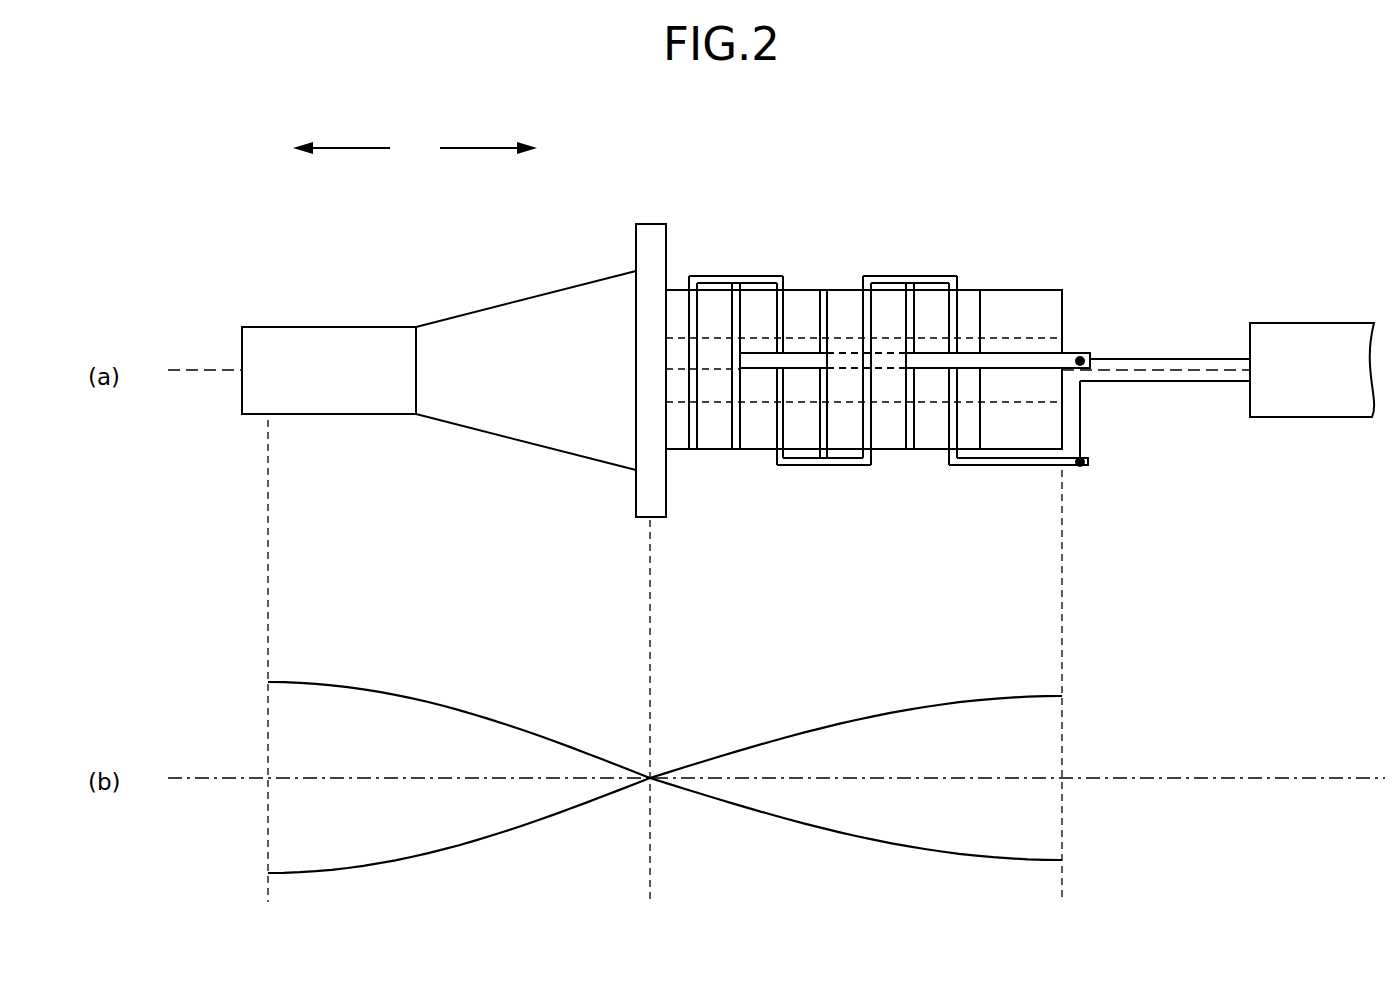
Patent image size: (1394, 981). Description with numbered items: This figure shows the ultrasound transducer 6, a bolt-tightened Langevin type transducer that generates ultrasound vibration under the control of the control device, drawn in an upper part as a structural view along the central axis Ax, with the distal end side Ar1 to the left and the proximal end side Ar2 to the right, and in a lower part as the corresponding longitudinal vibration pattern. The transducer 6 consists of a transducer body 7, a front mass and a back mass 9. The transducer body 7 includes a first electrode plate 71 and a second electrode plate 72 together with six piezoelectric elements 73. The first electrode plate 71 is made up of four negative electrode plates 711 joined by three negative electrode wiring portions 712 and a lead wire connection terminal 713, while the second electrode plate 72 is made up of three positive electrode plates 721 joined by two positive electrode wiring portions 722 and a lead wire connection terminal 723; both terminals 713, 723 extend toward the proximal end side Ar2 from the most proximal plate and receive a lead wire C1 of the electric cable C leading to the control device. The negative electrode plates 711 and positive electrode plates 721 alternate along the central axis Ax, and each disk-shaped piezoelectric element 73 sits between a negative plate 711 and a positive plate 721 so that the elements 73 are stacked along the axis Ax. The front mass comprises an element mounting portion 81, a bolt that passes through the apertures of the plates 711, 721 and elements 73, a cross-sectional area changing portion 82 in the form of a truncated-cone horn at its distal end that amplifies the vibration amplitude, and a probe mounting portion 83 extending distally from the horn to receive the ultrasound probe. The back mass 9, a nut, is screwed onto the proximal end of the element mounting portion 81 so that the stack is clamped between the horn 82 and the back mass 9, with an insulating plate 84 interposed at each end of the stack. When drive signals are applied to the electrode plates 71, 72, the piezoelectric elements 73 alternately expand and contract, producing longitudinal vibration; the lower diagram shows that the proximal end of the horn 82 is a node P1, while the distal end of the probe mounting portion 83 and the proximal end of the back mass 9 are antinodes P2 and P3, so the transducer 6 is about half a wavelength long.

The ultrasound transducer 6 is at (1082, 214).
The transducer body 7 is at (858, 160).
The first electrode plate 71 is at (737, 300).
The negative electrode plate 711 is at (693, 452).
The negative electrode wiring portion 712 is at (710, 292).
The lead wire connection terminal 713 is at (1007, 462).
The second electrode plate 72 is at (823, 292).
The positive electrode plate 721 is at (712, 280).
The positive electrode wiring portion 722 is at (800, 358).
The lead wire connection terminal 723 is at (1040, 356).
The piezoelectric element 73 is at (843, 292).
The element mounting portion 81 is at (1003, 338).
The cross-sectional area changing portion 82 is at (520, 315).
The probe mounting portion 83 is at (328, 337).
The insulating plate 84 is at (971, 300).
The back mass 9 is at (1036, 305).
The central axis Ax is at (205, 370).
The distal end side Ar1 is at (338, 147).
The proximal end side Ar2 is at (481, 147).
The electric cable C is at (1312, 337).
The lead wire C1 is at (1178, 380).
The node P1 is at (649, 732).
The antinode P2 is at (269, 682).
The antinode P3 is at (1062, 707).